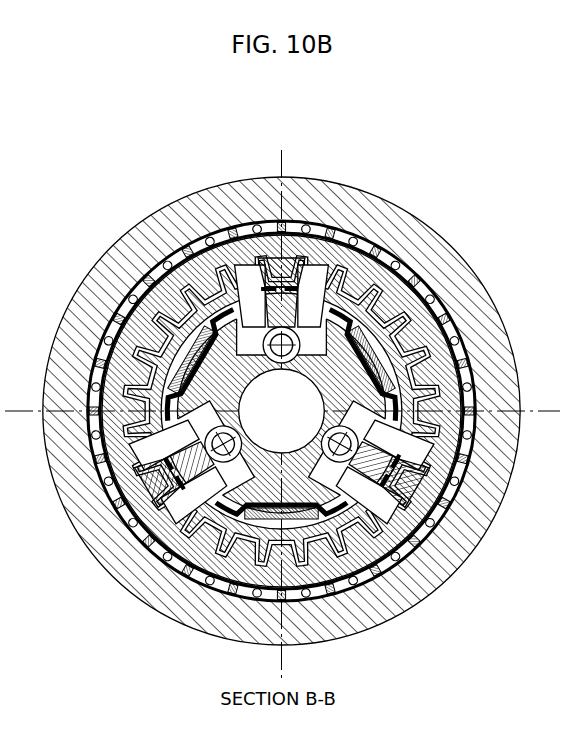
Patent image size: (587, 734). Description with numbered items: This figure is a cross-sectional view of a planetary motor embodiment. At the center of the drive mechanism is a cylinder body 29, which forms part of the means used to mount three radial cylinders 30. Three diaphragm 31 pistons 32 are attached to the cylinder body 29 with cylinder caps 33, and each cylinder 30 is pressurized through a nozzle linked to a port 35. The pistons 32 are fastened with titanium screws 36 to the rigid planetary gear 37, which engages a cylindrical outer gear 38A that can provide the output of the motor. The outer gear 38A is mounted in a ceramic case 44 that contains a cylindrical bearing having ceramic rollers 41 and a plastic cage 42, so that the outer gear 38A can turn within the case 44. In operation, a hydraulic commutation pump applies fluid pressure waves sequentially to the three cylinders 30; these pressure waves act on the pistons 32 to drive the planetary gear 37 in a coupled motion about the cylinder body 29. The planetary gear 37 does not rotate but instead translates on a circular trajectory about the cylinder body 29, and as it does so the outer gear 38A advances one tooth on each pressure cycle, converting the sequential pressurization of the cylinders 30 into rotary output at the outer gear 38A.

The cylinder body 29 is at (452, 226).
The radial cylinders 30 is at (339, 300).
The diaphragm 31 is at (378, 282).
The pistons 32 is at (292, 282).
The cylinder caps 33 is at (410, 270).
The port 35 is at (284, 275).
The titanium screws 36 is at (298, 300).
The rigid planetary gear 37 is at (271, 305).
The cylindrical outer gear 38A is at (248, 300).
The ceramic rollers 41 is at (240, 285).
The plastic cage 42 is at (222, 255).
The ceramic case 44 is at (160, 217).